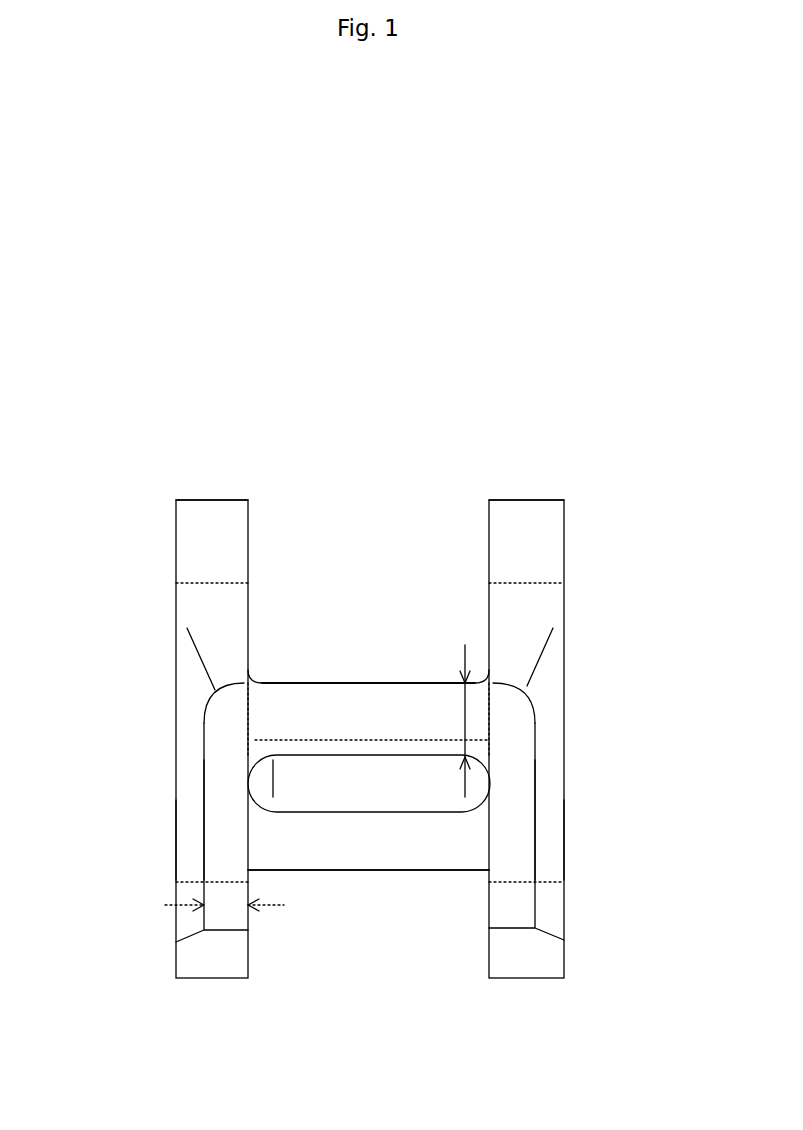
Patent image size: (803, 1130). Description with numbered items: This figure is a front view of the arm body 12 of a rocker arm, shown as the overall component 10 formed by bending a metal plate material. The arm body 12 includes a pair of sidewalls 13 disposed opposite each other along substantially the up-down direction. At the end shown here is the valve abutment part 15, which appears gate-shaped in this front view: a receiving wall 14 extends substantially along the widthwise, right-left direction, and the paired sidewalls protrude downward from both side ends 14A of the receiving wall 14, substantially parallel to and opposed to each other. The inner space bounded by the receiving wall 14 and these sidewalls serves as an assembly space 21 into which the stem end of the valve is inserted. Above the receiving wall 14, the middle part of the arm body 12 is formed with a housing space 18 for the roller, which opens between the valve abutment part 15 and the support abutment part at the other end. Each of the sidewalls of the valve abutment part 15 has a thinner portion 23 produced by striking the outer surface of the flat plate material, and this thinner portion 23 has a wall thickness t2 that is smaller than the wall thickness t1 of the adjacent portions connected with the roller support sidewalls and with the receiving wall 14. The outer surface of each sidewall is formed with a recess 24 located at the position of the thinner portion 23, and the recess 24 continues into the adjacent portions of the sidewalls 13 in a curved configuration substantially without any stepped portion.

The connection structure 10 is at (373, 393).
The arm body 12 is at (527, 500).
The sidewalls 13 is at (176, 540).
The receiving wall 14 is at (374, 690).
The both side ends 14A is at (240, 707).
The valve abutment part 15 is at (306, 683).
The housing space 18 is at (432, 537).
The assembly space 21 is at (393, 956).
The thinner portions 23 is at (223, 803).
The recess 24 is at (195, 840).
The wall thickness t1 is at (465, 710).
The wall thickness t2 is at (232, 907).